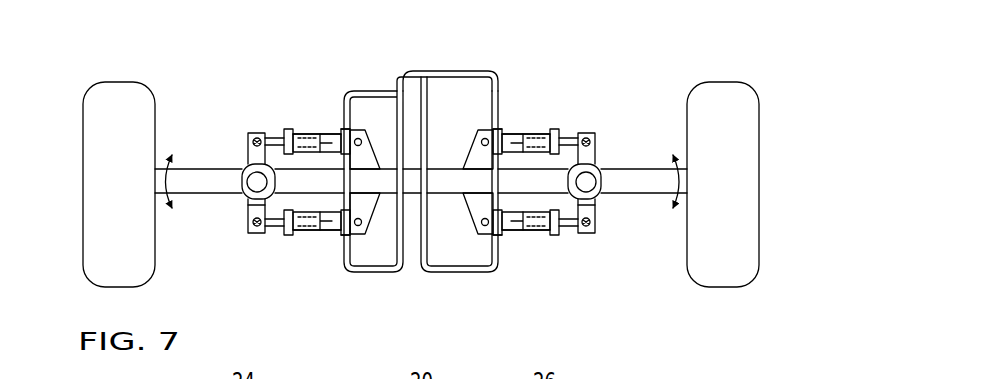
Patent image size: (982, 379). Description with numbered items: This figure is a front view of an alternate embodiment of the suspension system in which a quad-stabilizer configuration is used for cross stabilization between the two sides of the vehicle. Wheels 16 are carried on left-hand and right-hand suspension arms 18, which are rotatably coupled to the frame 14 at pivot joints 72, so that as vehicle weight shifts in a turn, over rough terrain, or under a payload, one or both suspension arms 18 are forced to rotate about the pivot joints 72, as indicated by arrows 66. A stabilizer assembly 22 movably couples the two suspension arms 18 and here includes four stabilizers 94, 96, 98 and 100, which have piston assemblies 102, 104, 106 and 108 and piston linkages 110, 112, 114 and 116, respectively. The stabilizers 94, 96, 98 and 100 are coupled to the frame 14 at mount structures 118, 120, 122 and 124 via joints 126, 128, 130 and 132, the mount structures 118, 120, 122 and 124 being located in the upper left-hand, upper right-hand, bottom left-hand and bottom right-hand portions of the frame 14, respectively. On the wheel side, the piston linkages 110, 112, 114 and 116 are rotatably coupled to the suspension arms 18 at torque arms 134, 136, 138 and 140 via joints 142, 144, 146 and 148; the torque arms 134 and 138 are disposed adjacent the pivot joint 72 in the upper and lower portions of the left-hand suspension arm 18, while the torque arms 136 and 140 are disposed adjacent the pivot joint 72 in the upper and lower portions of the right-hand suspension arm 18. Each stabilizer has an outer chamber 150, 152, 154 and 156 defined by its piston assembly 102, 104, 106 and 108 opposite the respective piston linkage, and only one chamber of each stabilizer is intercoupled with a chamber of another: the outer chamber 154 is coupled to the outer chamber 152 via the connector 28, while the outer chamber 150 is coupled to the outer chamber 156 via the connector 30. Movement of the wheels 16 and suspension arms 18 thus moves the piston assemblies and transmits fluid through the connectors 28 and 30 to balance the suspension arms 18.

The frame 14 is at (448, 194).
The wheels 16 is at (83, 187).
The suspension arms 18 is at (186, 200).
The stabilizer assembly 22 is at (453, 56).
The connector 28 is at (394, 272).
The connector 30 is at (440, 277).
The arrows 66 is at (170, 172).
The pivot joints 72 is at (236, 157).
The stabilizer 94 is at (305, 124).
The stabilizer 96 is at (543, 110).
The stabilizer 98 is at (304, 246).
The stabilizer 100 is at (540, 246).
The piston assembly 102 is at (320, 128).
The piston assembly 104 is at (520, 132).
The piston assembly 106 is at (318, 231).
The piston assembly 108 is at (519, 231).
The piston linkage 110 is at (277, 132).
The piston linkage 112 is at (572, 131).
The piston linkage 114 is at (276, 233).
The piston linkage 116 is at (569, 227).
The mount structure 118 is at (368, 130).
The mount structure 120 is at (464, 156).
The mount structure 122 is at (380, 226).
The mount structure 124 is at (452, 240).
The joint 126 is at (356, 128).
The joint 128 is at (484, 133).
The joint 130 is at (363, 234).
The joint 132 is at (483, 226).
The torque arm 134 is at (240, 152).
The torque arm 136 is at (596, 152).
The torque arm 138 is at (247, 213).
The torque arm 140 is at (598, 215).
The joint 142 is at (258, 132).
The joint 144 is at (588, 132).
The joint 146 is at (258, 235).
The joint 148 is at (586, 233).
The outer chamber 150 is at (341, 128).
The outer chamber 152 is at (512, 132).
The outer chamber 154 is at (353, 233).
The outer chamber 156 is at (512, 231).